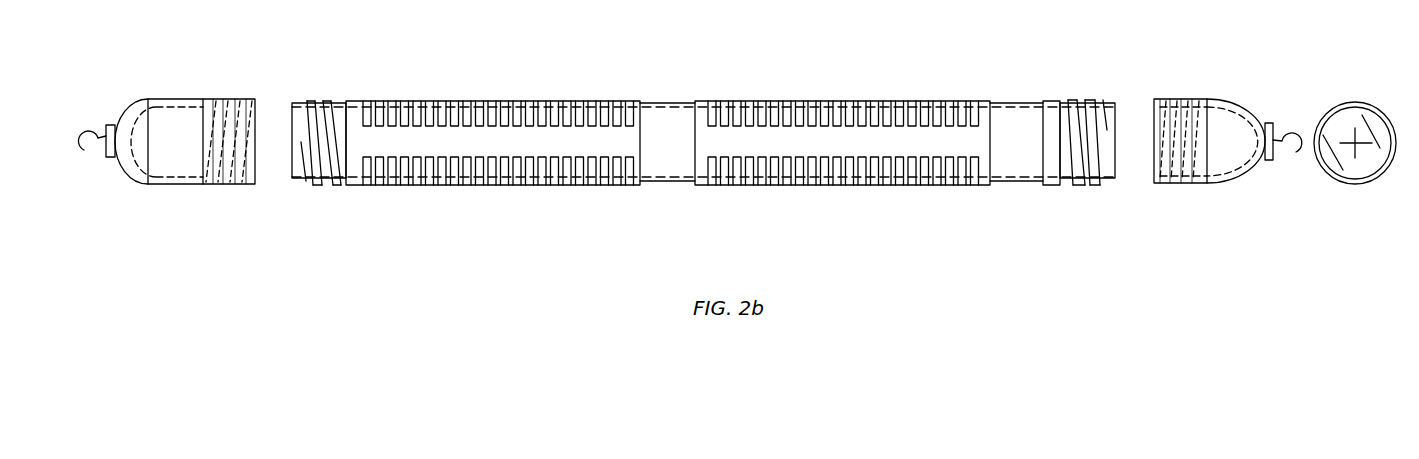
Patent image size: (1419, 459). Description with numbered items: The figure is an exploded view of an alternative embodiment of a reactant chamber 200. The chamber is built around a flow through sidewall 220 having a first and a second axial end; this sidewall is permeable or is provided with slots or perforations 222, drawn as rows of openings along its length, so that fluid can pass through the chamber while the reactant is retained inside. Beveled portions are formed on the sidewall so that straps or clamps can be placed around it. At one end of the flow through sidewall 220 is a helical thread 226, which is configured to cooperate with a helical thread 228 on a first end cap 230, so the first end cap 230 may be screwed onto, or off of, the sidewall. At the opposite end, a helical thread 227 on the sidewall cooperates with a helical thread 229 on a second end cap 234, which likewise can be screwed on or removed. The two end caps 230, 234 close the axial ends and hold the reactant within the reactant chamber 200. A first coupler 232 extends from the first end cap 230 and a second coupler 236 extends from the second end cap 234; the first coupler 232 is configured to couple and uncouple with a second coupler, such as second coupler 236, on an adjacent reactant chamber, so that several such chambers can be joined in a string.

The reactant chamber 200 is at (703, 128).
The flow through sidewall 220 is at (433, 100).
The slots or perforations 222 is at (535, 108).
The helical thread 226 is at (1087, 165).
The helical thread 227 is at (315, 182).
The helical thread 228 is at (1175, 126).
The helical thread 229 is at (228, 175).
The first end cap 230 is at (1236, 182).
The first coupler 232 is at (1290, 130).
The second end cap 234 is at (132, 180).
The second coupler 236 is at (86, 120).